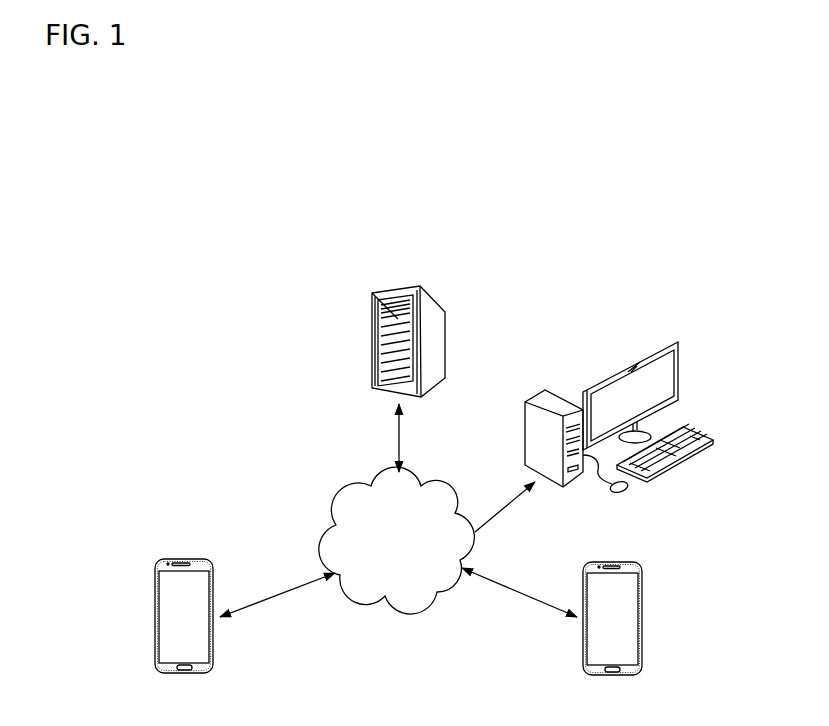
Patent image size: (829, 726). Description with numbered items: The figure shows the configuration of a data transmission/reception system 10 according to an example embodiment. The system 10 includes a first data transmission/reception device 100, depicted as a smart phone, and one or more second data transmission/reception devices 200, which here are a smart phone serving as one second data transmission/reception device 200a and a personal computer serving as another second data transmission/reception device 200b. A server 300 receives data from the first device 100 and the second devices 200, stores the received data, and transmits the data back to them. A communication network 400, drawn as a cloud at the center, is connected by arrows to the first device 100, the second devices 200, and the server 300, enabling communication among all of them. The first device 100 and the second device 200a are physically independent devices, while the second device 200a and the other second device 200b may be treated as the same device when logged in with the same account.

The data transmission/reception system 10 is at (690, 262).
The first data transmission/reception device 100 is at (190, 559).
The second data transmission/reception devices 200 is at (712, 508).
The 2a-th data transmission/reception device 200a is at (643, 597).
The 2b-th data transmission/reception device 200b is at (650, 476).
The server 300 is at (431, 303).
The communication network 400 is at (440, 487).